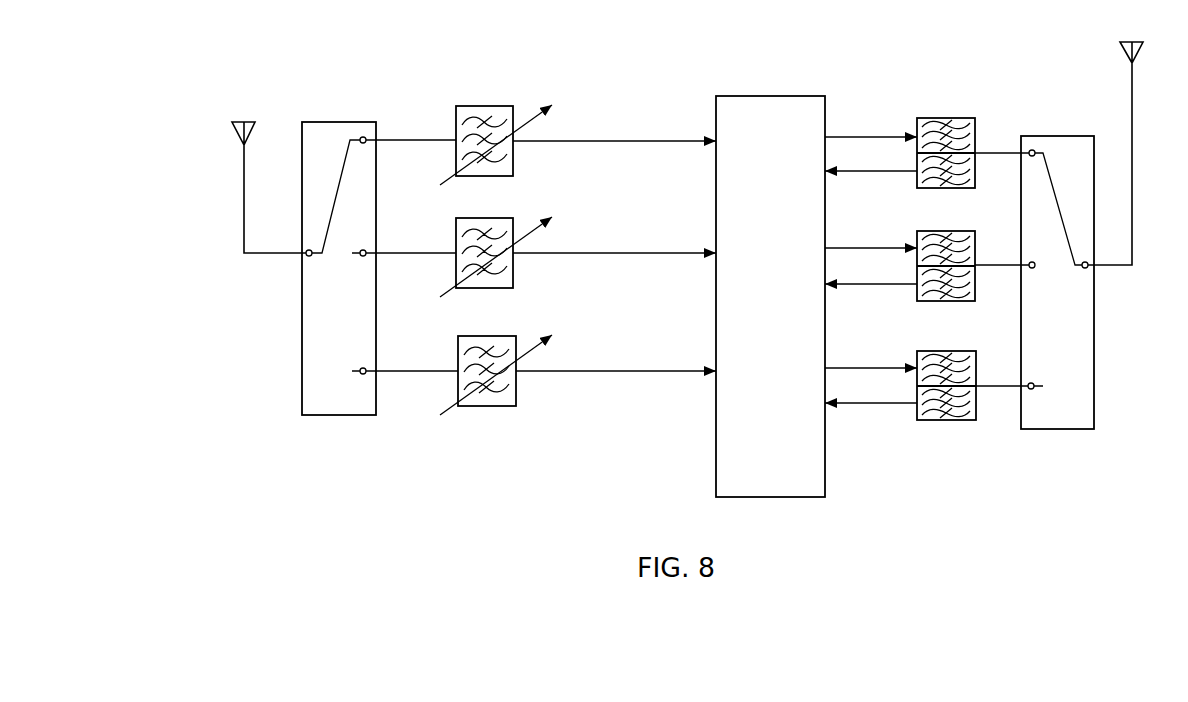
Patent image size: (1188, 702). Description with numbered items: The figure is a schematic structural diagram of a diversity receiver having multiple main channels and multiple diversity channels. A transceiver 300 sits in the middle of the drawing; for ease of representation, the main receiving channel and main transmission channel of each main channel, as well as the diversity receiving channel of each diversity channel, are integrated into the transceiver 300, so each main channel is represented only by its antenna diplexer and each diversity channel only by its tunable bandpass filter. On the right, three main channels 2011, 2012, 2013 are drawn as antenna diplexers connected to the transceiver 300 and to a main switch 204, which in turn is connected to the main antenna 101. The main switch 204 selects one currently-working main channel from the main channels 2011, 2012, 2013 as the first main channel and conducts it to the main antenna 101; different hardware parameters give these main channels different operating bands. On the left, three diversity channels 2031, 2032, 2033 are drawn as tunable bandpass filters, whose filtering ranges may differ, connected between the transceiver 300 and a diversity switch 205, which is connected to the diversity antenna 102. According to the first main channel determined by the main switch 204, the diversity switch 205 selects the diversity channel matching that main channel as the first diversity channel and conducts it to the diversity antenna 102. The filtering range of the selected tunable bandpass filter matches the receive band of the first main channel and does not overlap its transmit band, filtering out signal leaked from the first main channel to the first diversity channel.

The main antenna 101 is at (1132, 120).
The diversity antenna 102 is at (242, 168).
The main switch 204 is at (1068, 429).
The diversity switch 205 is at (302, 388).
The transceiver 300 is at (715, 431).
The main channel 2011 is at (927, 118).
The main channel 2012 is at (956, 301).
The main channel 2013 is at (956, 420).
The diversity channel 2031 is at (497, 106).
The diversity channel 2032 is at (485, 218).
The diversity channel 2033 is at (485, 336).